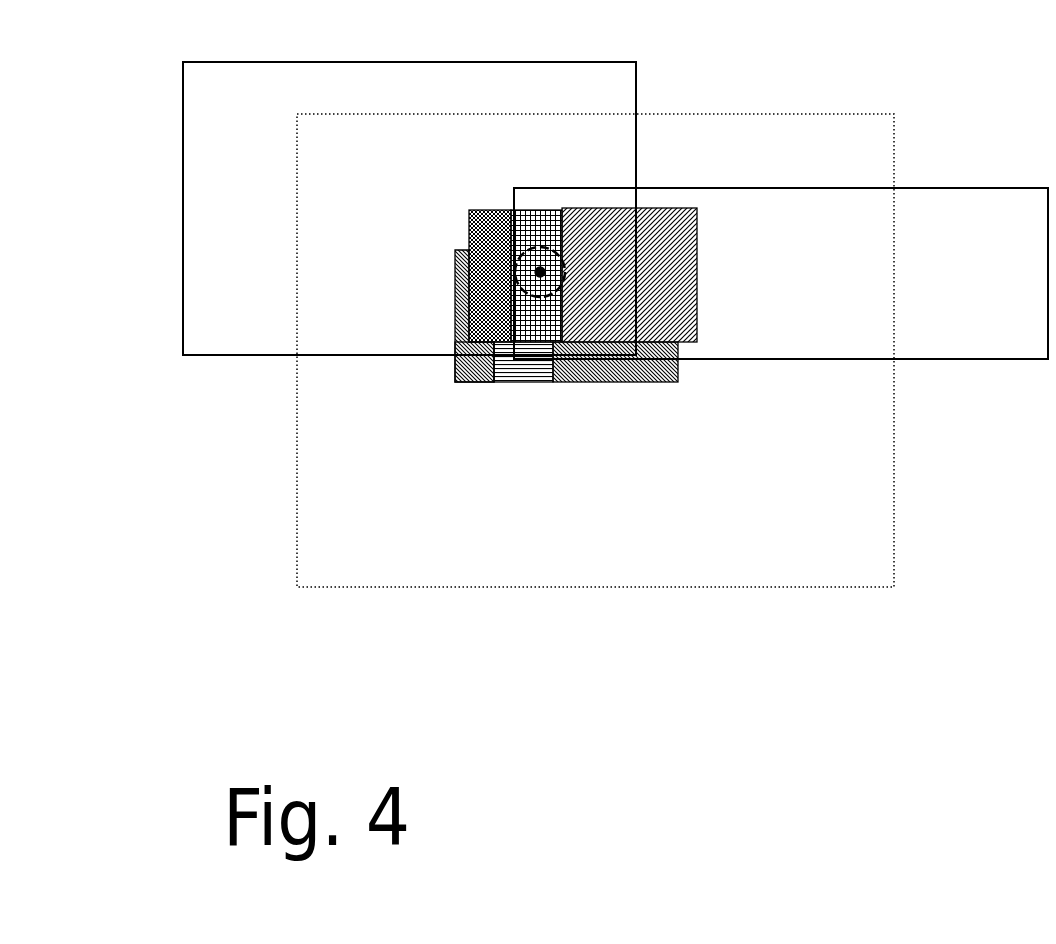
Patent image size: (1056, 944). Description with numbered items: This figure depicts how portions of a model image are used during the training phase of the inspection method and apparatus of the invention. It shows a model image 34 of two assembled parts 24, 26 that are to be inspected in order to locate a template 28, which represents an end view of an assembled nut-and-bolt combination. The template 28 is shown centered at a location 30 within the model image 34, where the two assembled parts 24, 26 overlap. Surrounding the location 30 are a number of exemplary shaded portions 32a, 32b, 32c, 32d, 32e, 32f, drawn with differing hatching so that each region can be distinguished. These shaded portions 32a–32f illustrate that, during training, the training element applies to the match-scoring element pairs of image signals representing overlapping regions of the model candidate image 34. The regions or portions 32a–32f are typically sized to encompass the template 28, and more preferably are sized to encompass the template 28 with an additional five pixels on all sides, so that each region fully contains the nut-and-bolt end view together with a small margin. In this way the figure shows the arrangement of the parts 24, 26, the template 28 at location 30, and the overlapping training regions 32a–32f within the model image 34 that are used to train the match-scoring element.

The assembled part 24 is at (615, 75).
The assembled part 26 is at (815, 193).
The template 28 is at (566, 263).
The location 30 is at (503, 250).
The shaded portion 32a is at (480, 377).
The shaded portion 32b is at (539, 360).
The shaded portion 32c is at (583, 377).
The shaded portion 32d is at (483, 210).
The shaded portion 32e is at (535, 212).
The shaded portion 32f is at (592, 219).
The model image 34 is at (853, 507).